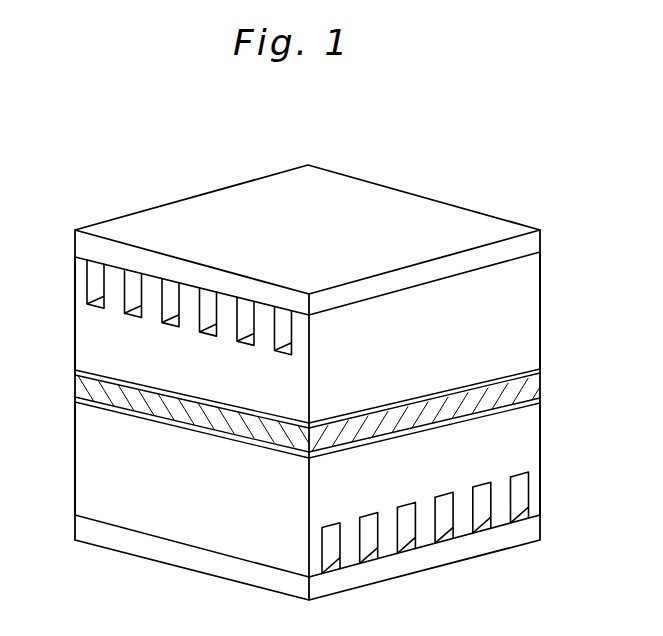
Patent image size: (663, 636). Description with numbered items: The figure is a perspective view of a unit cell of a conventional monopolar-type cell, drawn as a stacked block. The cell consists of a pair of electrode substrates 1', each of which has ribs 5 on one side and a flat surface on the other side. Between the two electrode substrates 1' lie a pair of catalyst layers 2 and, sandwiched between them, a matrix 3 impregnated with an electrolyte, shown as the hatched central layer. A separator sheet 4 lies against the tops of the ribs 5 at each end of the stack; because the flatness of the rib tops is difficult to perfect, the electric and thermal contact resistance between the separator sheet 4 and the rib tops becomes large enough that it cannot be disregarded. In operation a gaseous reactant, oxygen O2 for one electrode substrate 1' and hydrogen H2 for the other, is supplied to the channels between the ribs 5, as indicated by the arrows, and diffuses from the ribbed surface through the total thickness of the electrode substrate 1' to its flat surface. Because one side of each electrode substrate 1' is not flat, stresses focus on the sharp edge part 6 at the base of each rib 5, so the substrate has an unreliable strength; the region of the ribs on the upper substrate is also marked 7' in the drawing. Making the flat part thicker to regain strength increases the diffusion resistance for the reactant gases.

The electrode substrate 1' is at (343, 383).
The catalyst layer 2 is at (533, 368).
The matrix 3 is at (535, 388).
The separator sheet 4 is at (522, 247).
The rib 5 is at (148, 287).
The sharp edge part 6 is at (84, 308).
The rib 7' is at (79, 245).
The oxygen O2 is at (118, 323).
The hydrogen H2 is at (457, 546).